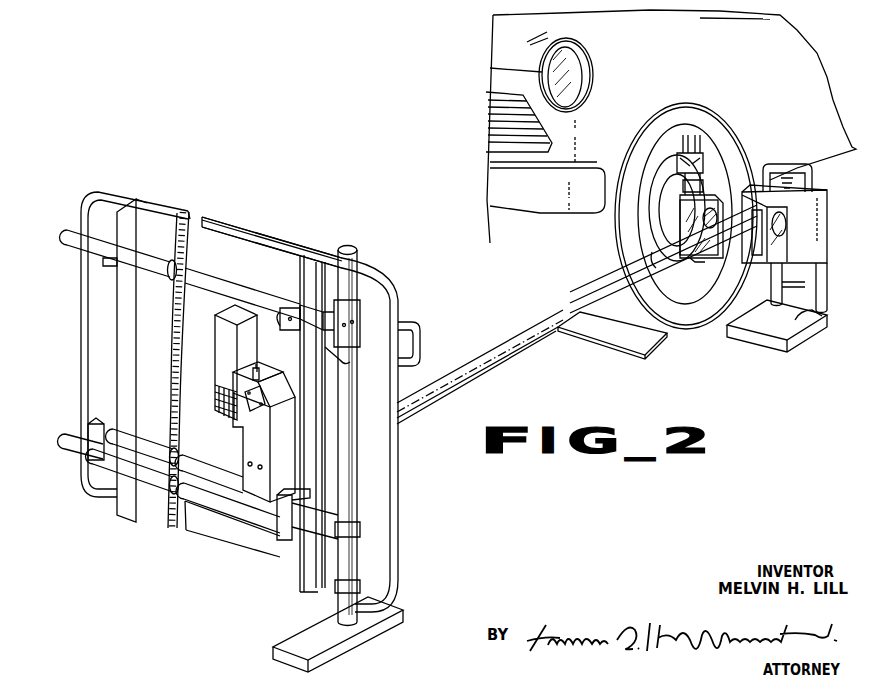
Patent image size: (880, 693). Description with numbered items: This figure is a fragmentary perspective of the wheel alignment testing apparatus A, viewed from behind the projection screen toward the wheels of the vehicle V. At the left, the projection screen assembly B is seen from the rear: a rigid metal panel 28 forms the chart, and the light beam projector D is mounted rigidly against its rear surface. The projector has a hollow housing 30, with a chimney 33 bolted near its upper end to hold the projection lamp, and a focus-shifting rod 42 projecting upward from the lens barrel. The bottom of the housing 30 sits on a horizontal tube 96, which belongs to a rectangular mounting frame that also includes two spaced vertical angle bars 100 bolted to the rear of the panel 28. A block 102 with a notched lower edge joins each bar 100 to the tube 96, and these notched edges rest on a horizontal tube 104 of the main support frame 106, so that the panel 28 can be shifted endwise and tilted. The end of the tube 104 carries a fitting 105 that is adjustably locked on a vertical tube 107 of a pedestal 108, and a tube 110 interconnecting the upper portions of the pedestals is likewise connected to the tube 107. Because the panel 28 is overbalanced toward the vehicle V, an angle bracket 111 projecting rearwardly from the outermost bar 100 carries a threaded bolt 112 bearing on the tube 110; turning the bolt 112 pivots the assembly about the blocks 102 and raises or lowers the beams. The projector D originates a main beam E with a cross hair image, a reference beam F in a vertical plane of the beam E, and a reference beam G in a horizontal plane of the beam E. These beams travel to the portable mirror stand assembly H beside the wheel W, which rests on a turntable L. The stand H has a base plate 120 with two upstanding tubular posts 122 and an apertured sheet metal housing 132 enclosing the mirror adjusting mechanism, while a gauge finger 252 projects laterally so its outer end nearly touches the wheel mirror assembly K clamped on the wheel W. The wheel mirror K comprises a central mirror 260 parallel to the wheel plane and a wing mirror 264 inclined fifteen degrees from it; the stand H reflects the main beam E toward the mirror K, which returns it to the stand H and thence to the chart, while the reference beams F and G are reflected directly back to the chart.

The rigid metal panel 28 is at (257, 277).
The hollow housing 30 is at (258, 443).
The chimney 33 is at (222, 346).
The focus-shifting rod 42 is at (257, 372).
The horizontal tube 96 is at (160, 452).
The vertical angle bars 100 is at (128, 224).
The block 102 is at (92, 446).
The horizontal tube 104 is at (237, 507).
The fitting 105 is at (352, 556).
The main support frame 106 is at (241, 266).
The vertical tube 107 is at (350, 489).
The pedestal 108 is at (340, 608).
The tube 110 is at (222, 272).
The angle bracket 111 is at (310, 325).
The threaded bolt 112 is at (302, 296).
The base plate 120 is at (793, 343).
The tubular posts 122 is at (822, 302).
The apertured sheet metal housing 132 is at (807, 220).
The gauge finger 252 is at (677, 230).
The central mirror 260 is at (703, 210).
The wing mirror 264 is at (685, 222).
The wheel alignment testing apparatus A is at (347, 198).
The projection screen assembly B is at (123, 192).
The light beam projector D is at (287, 457).
The main beam E is at (462, 387).
The reference beam F is at (595, 280).
The reference beam G is at (750, 253).
The portable mirror stand assembly H is at (763, 345).
The wheel mirror assembly K is at (722, 182).
The turntable L is at (669, 347).
The vehicle V is at (490, 42).
The wheel W is at (580, 224).